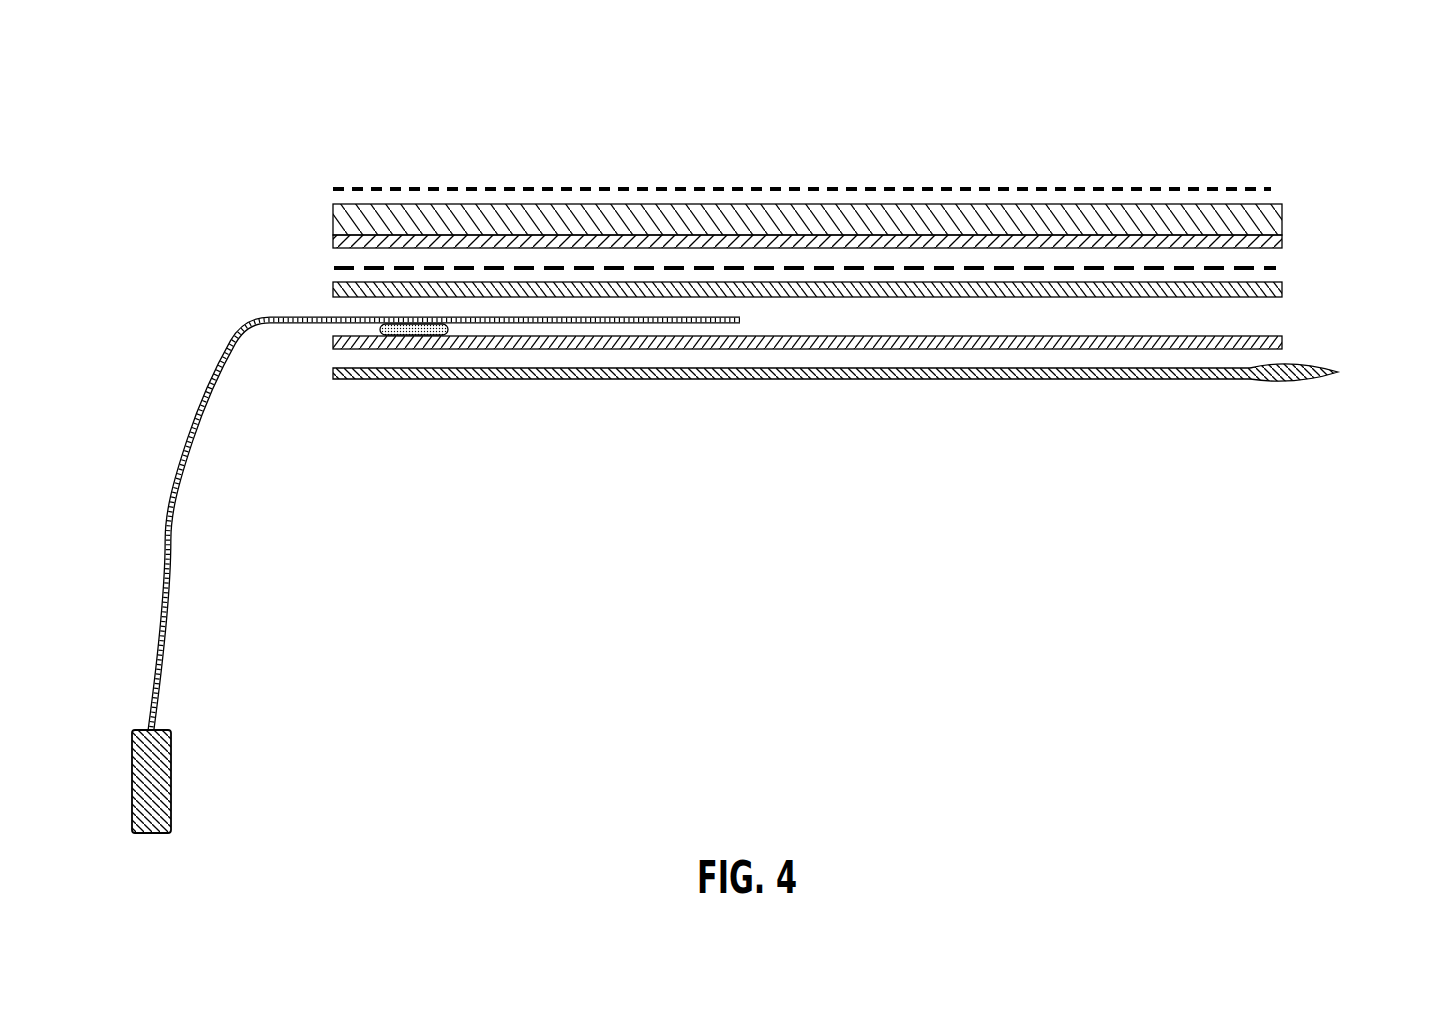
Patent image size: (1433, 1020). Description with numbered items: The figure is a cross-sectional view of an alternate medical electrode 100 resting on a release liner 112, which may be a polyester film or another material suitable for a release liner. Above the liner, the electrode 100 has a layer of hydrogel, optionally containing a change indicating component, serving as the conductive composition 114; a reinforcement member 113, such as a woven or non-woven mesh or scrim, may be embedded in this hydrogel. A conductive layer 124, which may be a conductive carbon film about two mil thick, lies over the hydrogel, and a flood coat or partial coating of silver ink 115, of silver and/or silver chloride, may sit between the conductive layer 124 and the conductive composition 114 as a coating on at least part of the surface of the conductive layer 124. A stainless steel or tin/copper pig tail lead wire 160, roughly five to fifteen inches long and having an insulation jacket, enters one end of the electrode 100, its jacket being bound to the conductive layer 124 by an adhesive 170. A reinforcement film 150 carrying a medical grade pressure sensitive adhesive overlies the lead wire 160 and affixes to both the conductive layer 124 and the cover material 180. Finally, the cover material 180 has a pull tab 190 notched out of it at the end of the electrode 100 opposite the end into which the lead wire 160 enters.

The medical electrode 100 is at (1162, 72).
The release liner 112 is at (955, 188).
The reinforcement member 113 is at (330, 235).
The conductive composition 114 is at (795, 225).
The silver ink 115 is at (330, 268).
The conductive layer 124 is at (1284, 290).
The reinforcement film 150 is at (1284, 343).
The lead wire 160 is at (167, 512).
The adhesive 170 is at (417, 333).
The cover material 180 is at (820, 380).
The pull tab 190 is at (1337, 373).